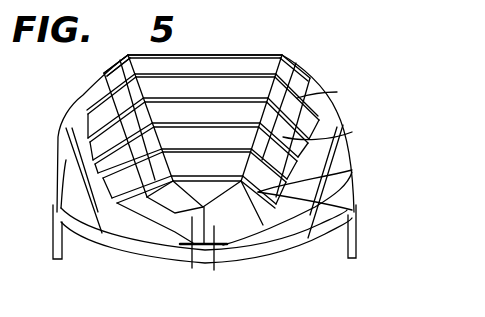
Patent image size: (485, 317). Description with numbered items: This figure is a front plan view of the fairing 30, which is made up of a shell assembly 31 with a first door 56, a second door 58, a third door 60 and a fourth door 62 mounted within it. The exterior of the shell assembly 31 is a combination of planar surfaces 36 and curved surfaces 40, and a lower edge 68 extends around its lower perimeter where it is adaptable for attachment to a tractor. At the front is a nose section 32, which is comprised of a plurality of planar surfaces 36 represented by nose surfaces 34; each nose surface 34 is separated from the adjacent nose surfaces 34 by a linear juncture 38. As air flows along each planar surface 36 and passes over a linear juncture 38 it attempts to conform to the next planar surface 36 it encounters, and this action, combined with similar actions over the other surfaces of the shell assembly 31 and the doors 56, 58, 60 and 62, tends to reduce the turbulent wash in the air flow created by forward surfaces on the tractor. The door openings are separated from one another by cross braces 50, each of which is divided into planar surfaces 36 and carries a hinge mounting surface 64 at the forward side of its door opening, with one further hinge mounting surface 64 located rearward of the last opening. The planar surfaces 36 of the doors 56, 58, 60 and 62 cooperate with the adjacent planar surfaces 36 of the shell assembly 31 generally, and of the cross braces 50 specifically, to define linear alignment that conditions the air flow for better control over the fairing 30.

The fairing 30 is at (388, 247).
The shell assembly 31 is at (113, 232).
The nose section 32 is at (213, 242).
The nose surface 34 is at (240, 227).
The planar surface 36 is at (167, 290).
The linear juncture 38 is at (150, 257).
The curved surface 40 is at (62, 143).
The cross brace 50 is at (123, 107).
The first door 56 is at (352, 210).
The second door 58 is at (352, 172).
The third door 60 is at (343, 130).
The fourth door 62 is at (333, 93).
The hinge mounting surface 64 is at (33, 189).
The lower edge 68 is at (313, 248).